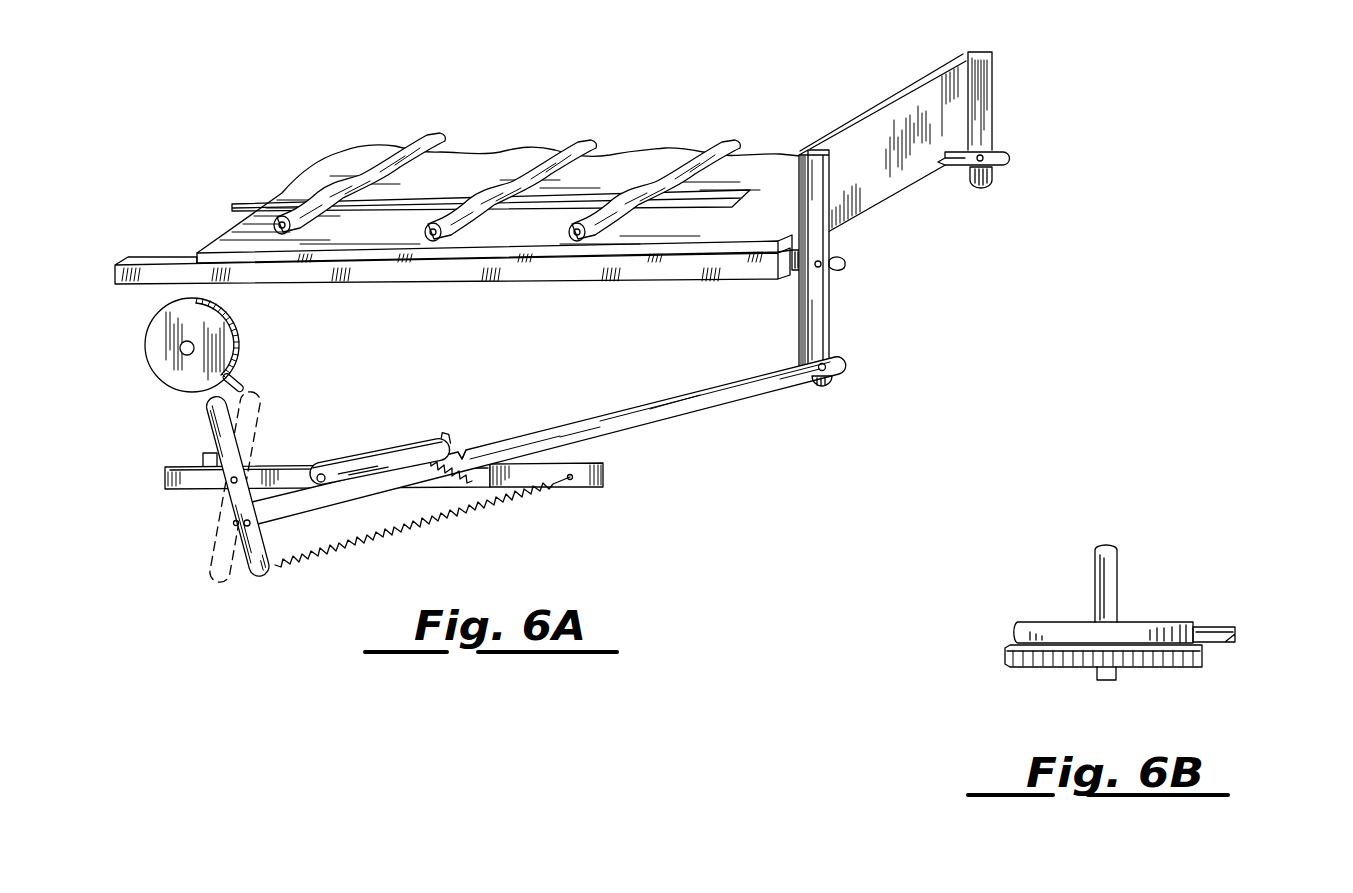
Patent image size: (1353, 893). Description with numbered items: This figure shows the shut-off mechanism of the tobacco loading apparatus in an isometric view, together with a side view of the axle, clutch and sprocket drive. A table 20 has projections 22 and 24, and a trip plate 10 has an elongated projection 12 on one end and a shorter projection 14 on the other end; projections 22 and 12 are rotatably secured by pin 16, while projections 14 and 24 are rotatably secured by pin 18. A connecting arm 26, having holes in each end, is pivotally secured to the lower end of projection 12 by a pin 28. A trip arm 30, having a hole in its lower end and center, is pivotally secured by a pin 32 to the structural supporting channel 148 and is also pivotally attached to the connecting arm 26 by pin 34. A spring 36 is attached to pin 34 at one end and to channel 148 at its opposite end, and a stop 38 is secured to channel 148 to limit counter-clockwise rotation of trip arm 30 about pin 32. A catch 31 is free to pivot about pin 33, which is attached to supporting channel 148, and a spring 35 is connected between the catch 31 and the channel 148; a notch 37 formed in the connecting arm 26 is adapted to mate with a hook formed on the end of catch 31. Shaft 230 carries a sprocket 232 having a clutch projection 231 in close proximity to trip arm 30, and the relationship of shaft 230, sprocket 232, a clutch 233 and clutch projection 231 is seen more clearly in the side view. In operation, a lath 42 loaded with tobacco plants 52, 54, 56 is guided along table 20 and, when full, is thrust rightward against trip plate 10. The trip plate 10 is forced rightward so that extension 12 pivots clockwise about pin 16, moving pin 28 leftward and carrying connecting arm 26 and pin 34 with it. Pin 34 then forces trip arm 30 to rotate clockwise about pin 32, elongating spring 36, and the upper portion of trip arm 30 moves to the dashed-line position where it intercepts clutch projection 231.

In FIG. 6A, the trip plate 10 is at (872, 193).
In FIG. 6A, the elongated projection 12 is at (829, 333).
In FIG. 6A, the shorter projection 14 is at (980, 190).
In FIG. 6A, the pin 16 is at (821, 267).
In FIG. 6A, the pin 18 is at (986, 164).
In FIG. 6A, the table 20 is at (342, 155).
In FIG. 6A, the projection 22 is at (847, 262).
In FIG. 6A, the projection 24 is at (1010, 158).
In FIG. 6A, the connecting arm 26 is at (668, 398).
In FIG. 6A, the pin 28 is at (832, 373).
In FIG. 6A, the trip arm 30 is at (236, 432).
In FIG. 6A, the catch 31 is at (383, 455).
In FIG. 6A, the pin 32 is at (227, 483).
In FIG. 6A, the pin 33 is at (322, 474).
In FIG. 6A, the pin 34 is at (233, 525).
In FIG. 6A, the spring 35 is at (458, 478).
In FIG. 6A, the spring 36 is at (348, 538).
In FIG. 6A, the notch 37 is at (468, 448).
In FIG. 6A, the stop 38 is at (203, 458).
In FIG. 6A, the lath 42 is at (248, 200).
In FIG. 6A, the tobacco plant 52 is at (670, 173).
In FIG. 6A, the tobacco plant 54 is at (434, 133).
In FIG. 6A, the tobacco plant 56 is at (442, 132).
In FIG. 6A, the structural supporting channel 148 is at (608, 476).
In FIG. 6A, the shaft 230 is at (182, 345).
In FIG. 6B, the shaft 230 is at (1118, 574).
In FIG. 6A, the clutch projection 231 is at (245, 382).
In FIG. 6B, the clutch projection 231 is at (1238, 630).
In FIG. 6A, the sprocket 232 is at (242, 320).
In FIG. 6B, the sprocket 232 is at (1205, 656).
In FIG. 6B, the clutch 233 is at (1013, 633).